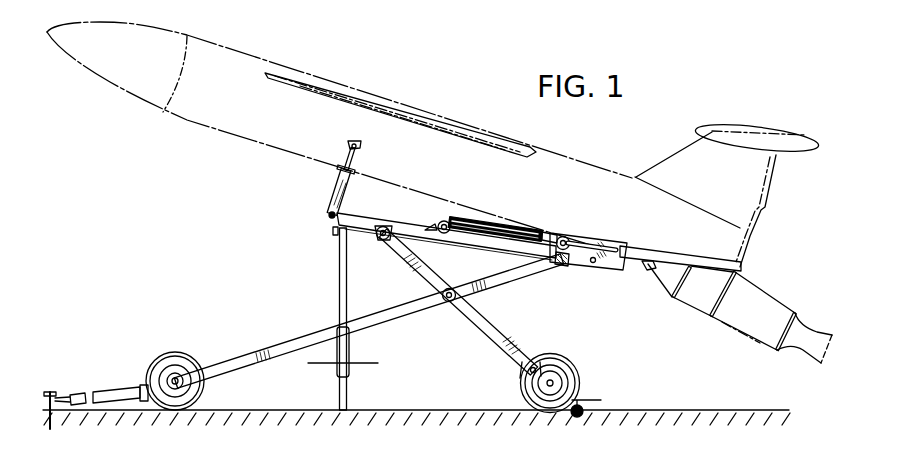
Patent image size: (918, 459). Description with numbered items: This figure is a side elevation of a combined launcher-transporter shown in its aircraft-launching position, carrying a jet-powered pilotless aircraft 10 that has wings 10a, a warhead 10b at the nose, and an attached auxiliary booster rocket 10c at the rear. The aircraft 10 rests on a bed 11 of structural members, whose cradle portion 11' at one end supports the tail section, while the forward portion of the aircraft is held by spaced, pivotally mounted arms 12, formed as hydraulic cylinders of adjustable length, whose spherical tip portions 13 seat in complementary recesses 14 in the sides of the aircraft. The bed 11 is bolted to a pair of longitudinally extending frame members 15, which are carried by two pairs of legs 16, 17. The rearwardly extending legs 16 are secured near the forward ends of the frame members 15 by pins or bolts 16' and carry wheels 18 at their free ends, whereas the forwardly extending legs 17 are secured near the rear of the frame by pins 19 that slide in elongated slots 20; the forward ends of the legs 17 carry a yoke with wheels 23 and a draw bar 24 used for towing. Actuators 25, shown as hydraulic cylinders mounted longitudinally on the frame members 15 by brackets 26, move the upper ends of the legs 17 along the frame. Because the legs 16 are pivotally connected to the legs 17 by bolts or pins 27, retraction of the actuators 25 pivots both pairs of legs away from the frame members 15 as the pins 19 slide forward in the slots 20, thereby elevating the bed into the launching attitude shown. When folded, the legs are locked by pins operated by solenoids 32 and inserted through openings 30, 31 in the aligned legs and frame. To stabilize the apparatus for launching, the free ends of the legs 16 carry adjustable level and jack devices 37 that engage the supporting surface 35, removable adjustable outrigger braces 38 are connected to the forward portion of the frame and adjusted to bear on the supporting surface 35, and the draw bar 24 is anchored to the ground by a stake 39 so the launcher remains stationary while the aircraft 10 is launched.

The aircraft 10 is at (548, 143).
The wings 10a is at (327, 84).
The warhead 10b is at (111, 80).
The auxiliary booster rocket 10c is at (722, 324).
The bed 11 is at (444, 229).
The cradle portion 11' is at (680, 252).
The pivotally mounted arms 12 is at (335, 186).
The spherical tip portions 13 is at (358, 148).
The recesses 14 is at (349, 141).
The frame members 15 is at (444, 245).
The legs 16 is at (457, 302).
The pins or bolts 16' is at (372, 243).
The legs 17 is at (501, 282).
The wheels 18 is at (573, 362).
The pins 19 is at (565, 238).
The elongated slots 20 is at (607, 243).
The wheels 23 is at (200, 338).
The draw bar 24 is at (84, 393).
The actuators 25 is at (506, 231).
The brackets 26 is at (434, 223).
The bolts or pins 27 is at (450, 302).
The openings 30 is at (533, 368).
The openings 31 is at (596, 263).
The solenoids 32 is at (563, 267).
The supporting surface 35 is at (434, 410).
The adjustable level and jack devices 37 is at (600, 402).
The outrigger braces 38 is at (339, 293).
The stake 39 is at (47, 392).